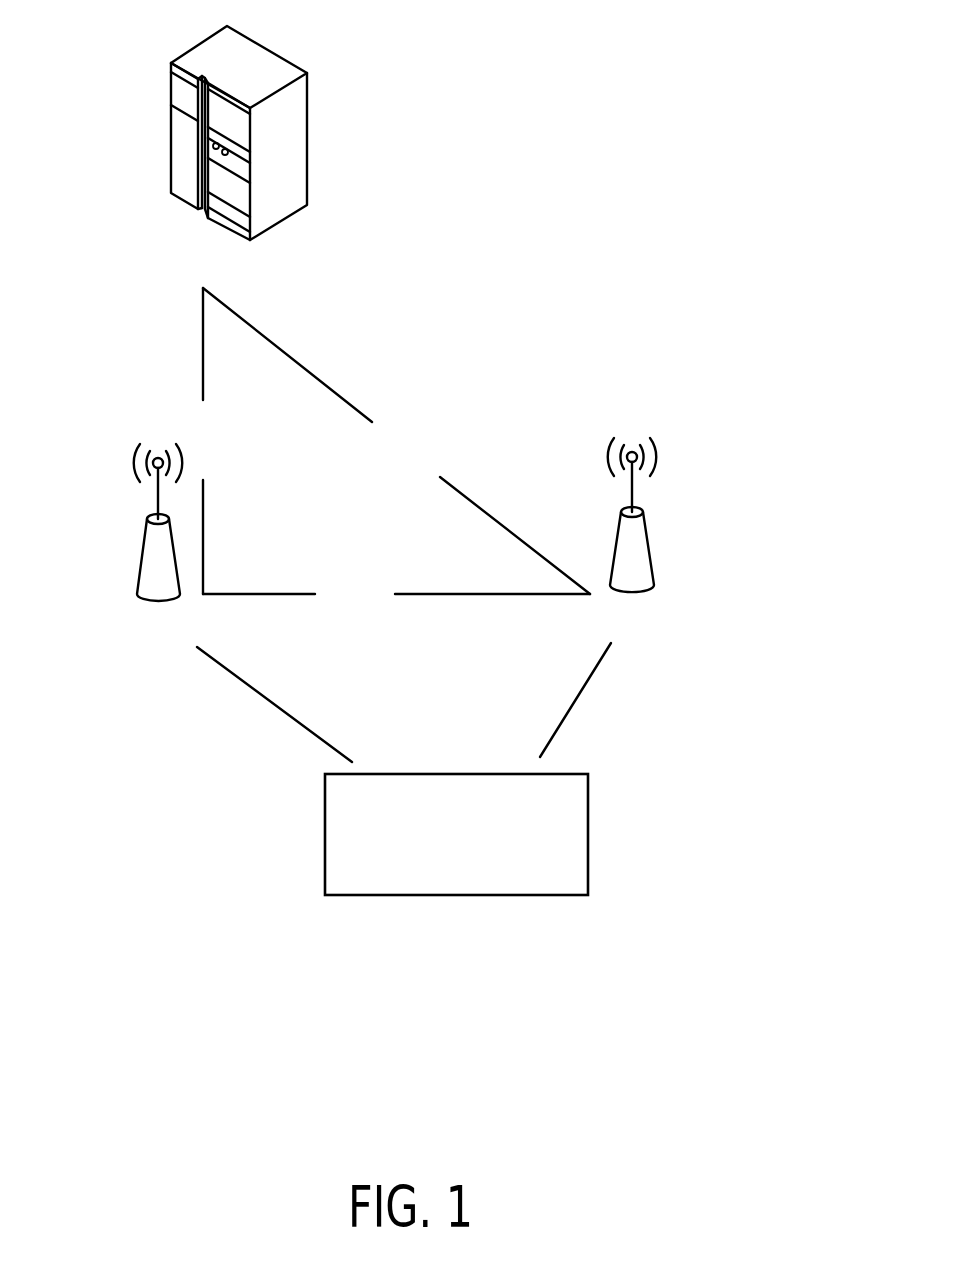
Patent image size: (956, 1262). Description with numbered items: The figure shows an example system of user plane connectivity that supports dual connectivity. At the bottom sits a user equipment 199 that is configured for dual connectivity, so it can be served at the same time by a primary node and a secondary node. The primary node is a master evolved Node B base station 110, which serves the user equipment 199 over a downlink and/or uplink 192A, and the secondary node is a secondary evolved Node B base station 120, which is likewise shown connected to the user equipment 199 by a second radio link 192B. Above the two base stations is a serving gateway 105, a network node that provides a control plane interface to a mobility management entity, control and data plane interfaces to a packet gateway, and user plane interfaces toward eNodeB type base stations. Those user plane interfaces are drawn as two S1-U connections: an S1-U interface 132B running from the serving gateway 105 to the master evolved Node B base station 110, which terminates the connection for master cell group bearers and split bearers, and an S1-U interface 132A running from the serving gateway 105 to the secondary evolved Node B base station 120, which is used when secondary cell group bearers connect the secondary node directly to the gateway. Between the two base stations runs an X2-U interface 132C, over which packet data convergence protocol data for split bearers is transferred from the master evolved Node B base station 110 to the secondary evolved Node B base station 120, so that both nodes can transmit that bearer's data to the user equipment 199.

The serving gateway 105 is at (288, 158).
The master evolved Node B base station 110 is at (142, 553).
The secondary evolved Node B base station 120 is at (653, 555).
The S1-U interface 132A is at (317, 377).
The S1-U interface 132B is at (202, 352).
The X2-U interface 132C is at (252, 596).
The downlink 192A is at (263, 697).
The radio link between SeNB and user equipment 192B is at (579, 697).
The user equipment 199 is at (440, 861).